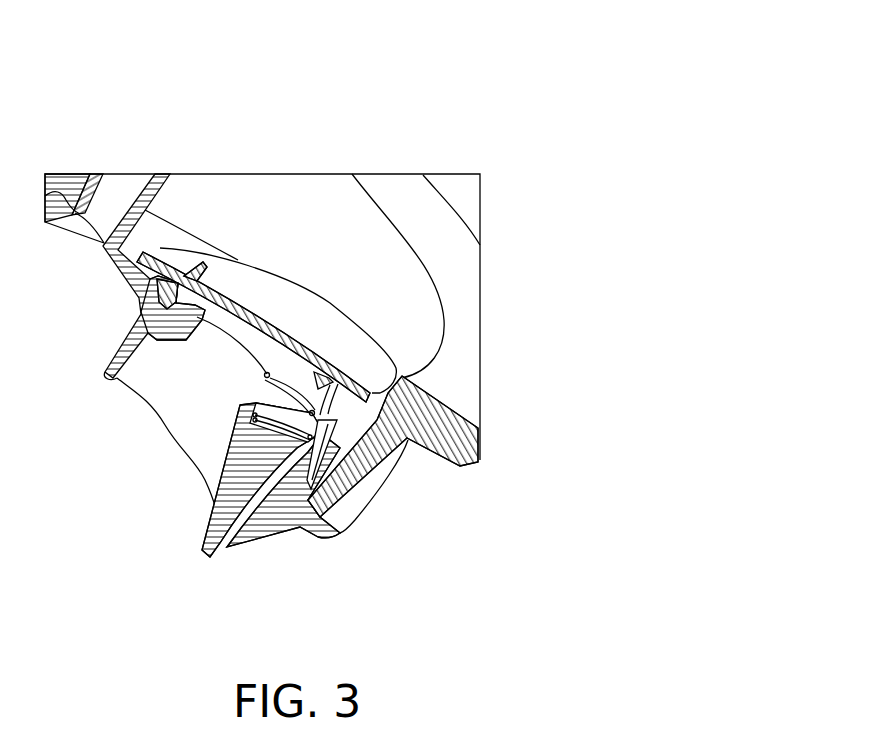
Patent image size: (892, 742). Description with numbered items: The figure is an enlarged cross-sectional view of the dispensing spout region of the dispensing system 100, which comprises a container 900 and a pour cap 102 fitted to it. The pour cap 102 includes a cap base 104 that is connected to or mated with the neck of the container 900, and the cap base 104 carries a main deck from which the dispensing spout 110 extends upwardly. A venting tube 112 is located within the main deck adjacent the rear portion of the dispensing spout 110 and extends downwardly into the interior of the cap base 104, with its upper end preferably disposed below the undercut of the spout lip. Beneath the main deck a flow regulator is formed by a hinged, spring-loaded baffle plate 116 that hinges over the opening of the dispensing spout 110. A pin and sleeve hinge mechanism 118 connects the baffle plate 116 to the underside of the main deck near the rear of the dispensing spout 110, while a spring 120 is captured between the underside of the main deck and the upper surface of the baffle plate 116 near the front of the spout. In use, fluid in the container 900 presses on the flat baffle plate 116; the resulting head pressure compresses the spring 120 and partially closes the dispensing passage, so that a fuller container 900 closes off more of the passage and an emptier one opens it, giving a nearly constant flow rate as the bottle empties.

The dispensing system 100 is at (586, 77).
The container 900 is at (447, 239).
The pour cap 102 is at (130, 390).
The cap base 104 is at (316, 540).
The dispensing spout 110 is at (200, 473).
The venting tube 112 is at (115, 190).
The baffle plate 116 is at (285, 297).
The pin and sleeve hinge mechanism 118 is at (139, 317).
The spring 120 is at (313, 405).